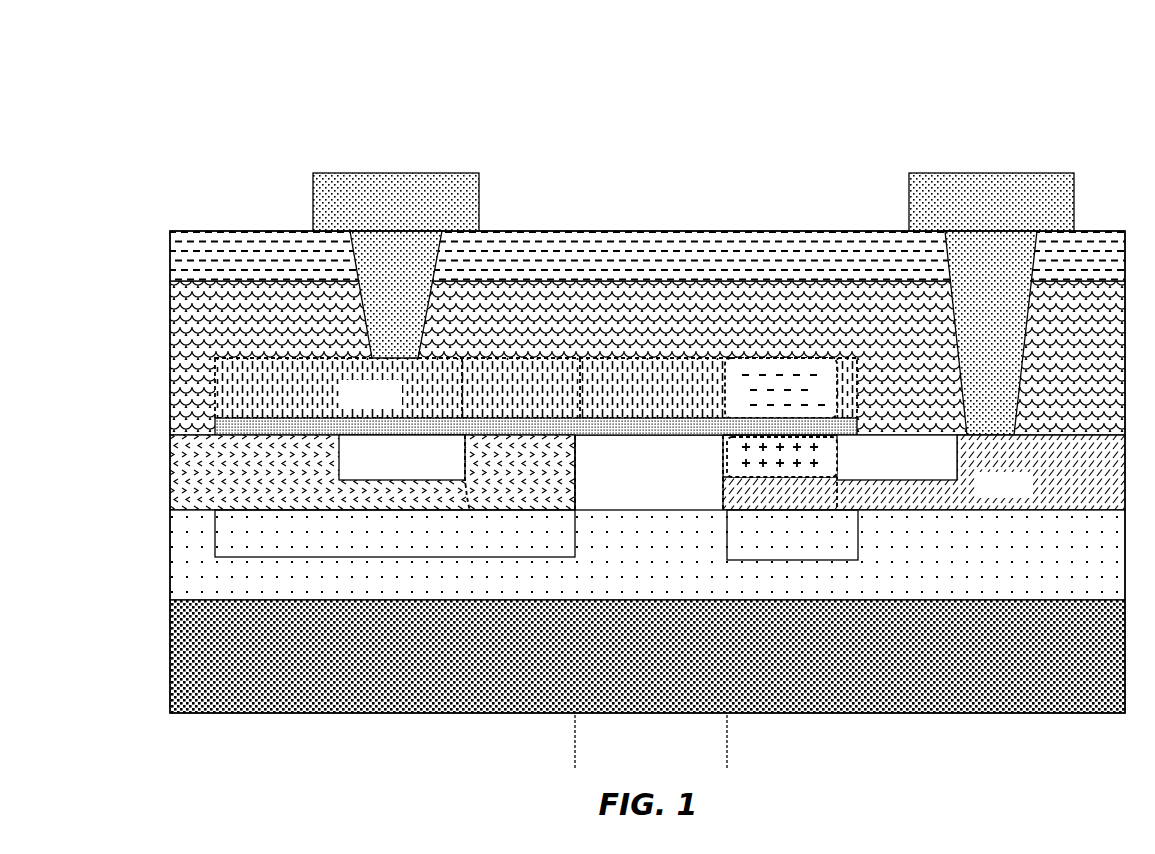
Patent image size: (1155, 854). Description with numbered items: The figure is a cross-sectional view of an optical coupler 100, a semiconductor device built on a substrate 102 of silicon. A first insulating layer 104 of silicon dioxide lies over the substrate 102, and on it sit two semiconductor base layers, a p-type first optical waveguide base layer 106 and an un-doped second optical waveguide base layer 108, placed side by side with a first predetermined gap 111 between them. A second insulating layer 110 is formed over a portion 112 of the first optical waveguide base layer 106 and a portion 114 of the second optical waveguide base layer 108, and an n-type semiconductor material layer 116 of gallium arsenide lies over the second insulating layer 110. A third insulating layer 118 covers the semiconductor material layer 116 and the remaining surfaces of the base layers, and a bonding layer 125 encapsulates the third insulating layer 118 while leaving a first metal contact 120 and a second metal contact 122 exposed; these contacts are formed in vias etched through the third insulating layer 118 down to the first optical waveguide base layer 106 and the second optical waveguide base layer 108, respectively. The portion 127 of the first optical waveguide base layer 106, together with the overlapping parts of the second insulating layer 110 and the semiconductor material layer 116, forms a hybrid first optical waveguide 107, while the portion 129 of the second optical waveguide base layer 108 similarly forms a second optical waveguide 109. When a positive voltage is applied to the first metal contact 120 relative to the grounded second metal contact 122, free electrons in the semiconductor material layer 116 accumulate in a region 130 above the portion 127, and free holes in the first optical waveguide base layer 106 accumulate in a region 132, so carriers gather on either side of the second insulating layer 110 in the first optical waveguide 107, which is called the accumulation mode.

The optical coupler 100 is at (1011, 103).
The substrate 102 is at (196, 665).
The first insulating layer 104 is at (1061, 565).
The first optical waveguide base layer 106 is at (1061, 467).
The first optical waveguide 107 is at (722, 441).
The second optical waveguide base layer 108 is at (196, 480).
The second optical waveguide 109 is at (578, 460).
The second insulating layer 110 is at (220, 429).
The first predetermined gap 111 is at (724, 745).
The portion of the first optical waveguide base layer 112 is at (791, 560).
The portion of the second optical waveguide base layer 114 is at (394, 557).
The semiconductor material layer 116 is at (244, 403).
The third insulating layer 118 is at (196, 331).
The first metal contact 120 is at (971, 209).
The second metal contact 122 is at (376, 209).
The bonding layer 125 is at (196, 265).
The portion of the first optical waveguide base layer 127 is at (782, 518).
The portion of the second optical waveguide base layer 129 is at (520, 518).
The region of the semiconductor material layer 130 is at (785, 403).
The region in the first optical waveguide base layer 132 is at (725, 440).